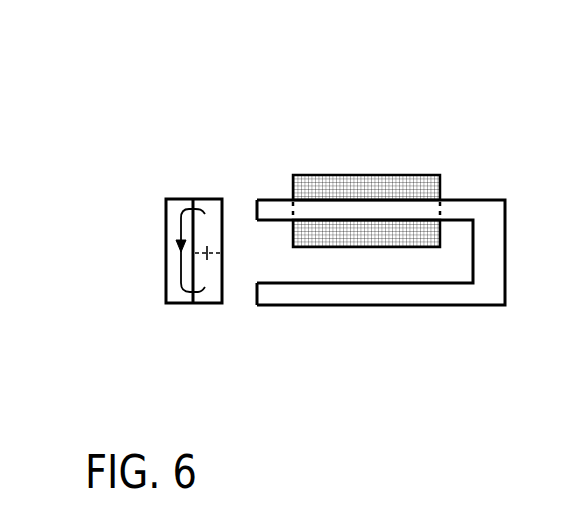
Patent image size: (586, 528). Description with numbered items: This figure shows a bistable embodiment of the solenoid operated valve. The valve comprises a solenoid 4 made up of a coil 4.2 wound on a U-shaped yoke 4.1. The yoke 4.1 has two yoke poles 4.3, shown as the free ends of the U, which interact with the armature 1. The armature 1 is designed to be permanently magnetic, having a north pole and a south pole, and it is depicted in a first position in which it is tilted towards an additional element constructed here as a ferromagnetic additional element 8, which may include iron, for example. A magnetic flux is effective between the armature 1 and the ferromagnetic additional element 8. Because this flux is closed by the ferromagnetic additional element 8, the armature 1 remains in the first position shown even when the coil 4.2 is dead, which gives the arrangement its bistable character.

The solenoid 4 is at (485, 70).
The U-shaped yoke 4.1 is at (492, 207).
The coil 4.2 is at (347, 190).
The yoke poles 4.3 is at (263, 288).
The ferromagnetic additional element 8 is at (172, 211).
The armature 1 is at (212, 295).